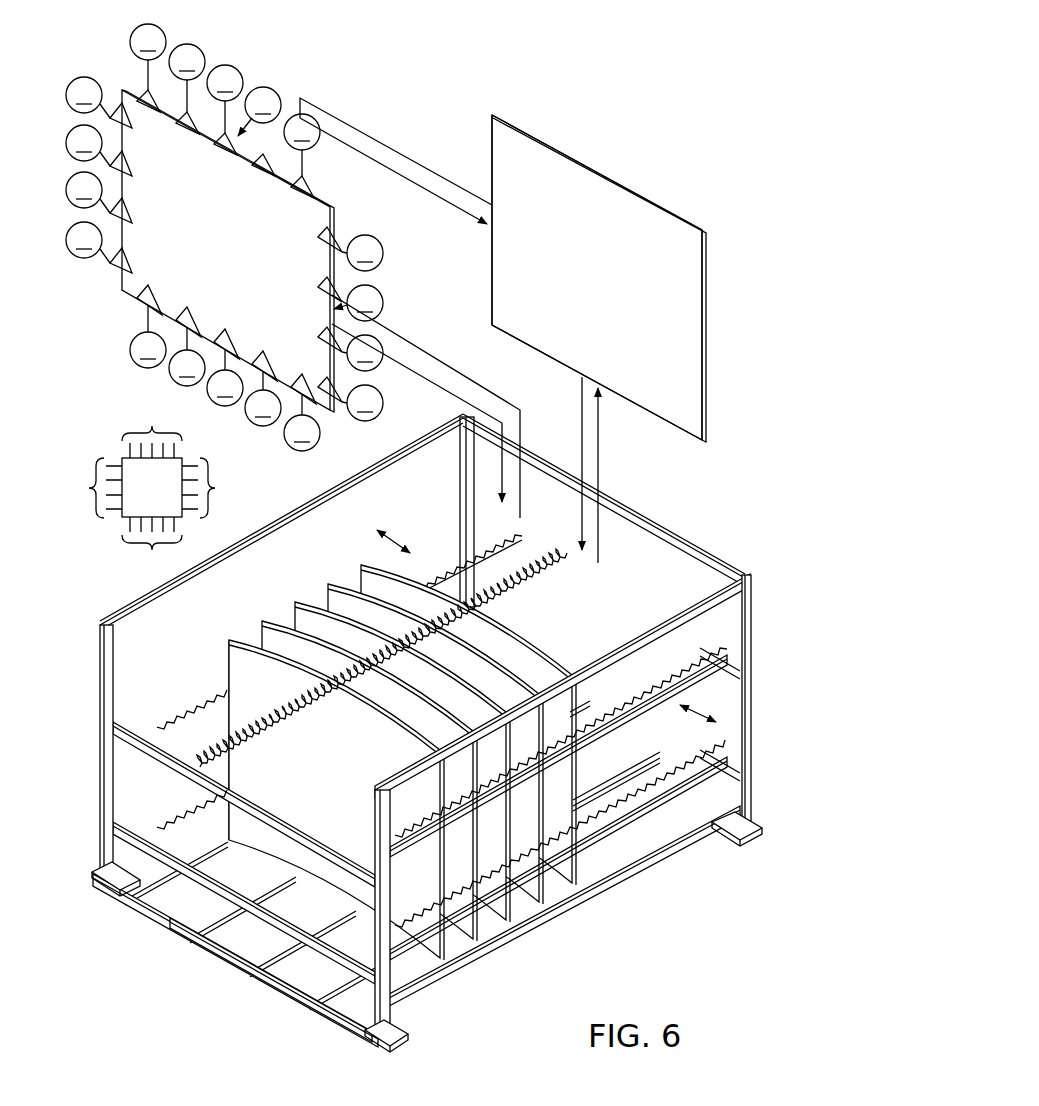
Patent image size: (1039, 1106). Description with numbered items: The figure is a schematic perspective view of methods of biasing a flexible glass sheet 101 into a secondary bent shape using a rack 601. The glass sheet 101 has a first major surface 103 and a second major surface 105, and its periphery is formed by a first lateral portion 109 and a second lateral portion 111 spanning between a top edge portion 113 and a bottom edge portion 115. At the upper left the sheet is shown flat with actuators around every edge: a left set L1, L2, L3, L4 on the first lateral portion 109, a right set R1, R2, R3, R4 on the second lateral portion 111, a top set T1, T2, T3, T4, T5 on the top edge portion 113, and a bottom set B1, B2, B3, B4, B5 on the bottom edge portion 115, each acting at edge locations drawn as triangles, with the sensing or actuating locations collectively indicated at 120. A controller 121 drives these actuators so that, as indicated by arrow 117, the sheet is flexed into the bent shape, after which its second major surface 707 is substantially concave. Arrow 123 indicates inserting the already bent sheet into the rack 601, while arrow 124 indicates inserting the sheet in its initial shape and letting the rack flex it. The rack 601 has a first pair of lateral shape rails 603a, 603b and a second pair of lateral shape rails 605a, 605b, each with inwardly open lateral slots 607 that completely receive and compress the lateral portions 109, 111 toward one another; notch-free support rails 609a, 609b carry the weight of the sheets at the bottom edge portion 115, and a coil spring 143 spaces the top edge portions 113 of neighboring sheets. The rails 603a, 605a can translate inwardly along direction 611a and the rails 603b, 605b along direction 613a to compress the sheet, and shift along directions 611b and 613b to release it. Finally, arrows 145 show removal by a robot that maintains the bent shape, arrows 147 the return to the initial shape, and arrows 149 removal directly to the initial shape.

The flexible glass sheet 101 is at (110, 72).
The first major surface 103 is at (573, 281).
The second major surface 105 is at (672, 342).
The first lateral portion 109 is at (492, 136).
The second lateral portion 111 is at (706, 298).
The top edge portion 113 is at (690, 218).
The bottom edge portion 115 is at (646, 412).
The arrow 117 is at (396, 150).
The edge sensors 120 is at (134, 170).
The controller 121 is at (128, 460).
The arrow 123 is at (440, 386).
The arrow 124 is at (580, 410).
The coil spring 143 is at (278, 734).
The arrows 145 is at (444, 352).
The arrows 147 is at (442, 206).
The arrows 149 is at (600, 470).
The rack 601 is at (766, 582).
The first lateral shape rail 603a is at (154, 724).
The second lateral shape rail 603b is at (730, 658).
The first lateral shape rail of second pair 605a is at (154, 824).
The second lateral shape rail of second pair 605b is at (652, 840).
The lateral slots 607 is at (430, 576).
The support rail 609a is at (213, 932).
The support rail 609b is at (288, 980).
The direction 611a is at (398, 546).
The direction 611b is at (375, 531).
The direction 613a is at (716, 706).
The direction 613b is at (718, 722).
The second major surface 707 is at (201, 250).
The top actuator T1 is at (148, 57).
The top actuator T2 is at (187, 78).
The top actuator T3 is at (225, 99).
The top actuator T4 is at (259, 111).
The top actuator T5 is at (302, 145).
The left actuator L1 is at (88, 97).
The left actuator L2 is at (88, 145).
The left actuator L3 is at (88, 192).
The left actuator L4 is at (88, 242).
The bottom actuator B1 is at (148, 337).
The bottom actuator B2 is at (187, 357).
The bottom actuator B3 is at (225, 378).
The bottom actuator B4 is at (263, 399).
The bottom actuator B5 is at (302, 423).
The right actuator R1 is at (362, 253).
The right actuator R2 is at (358, 303).
The right actuator R3 is at (362, 353).
The right actuator R4 is at (362, 403).